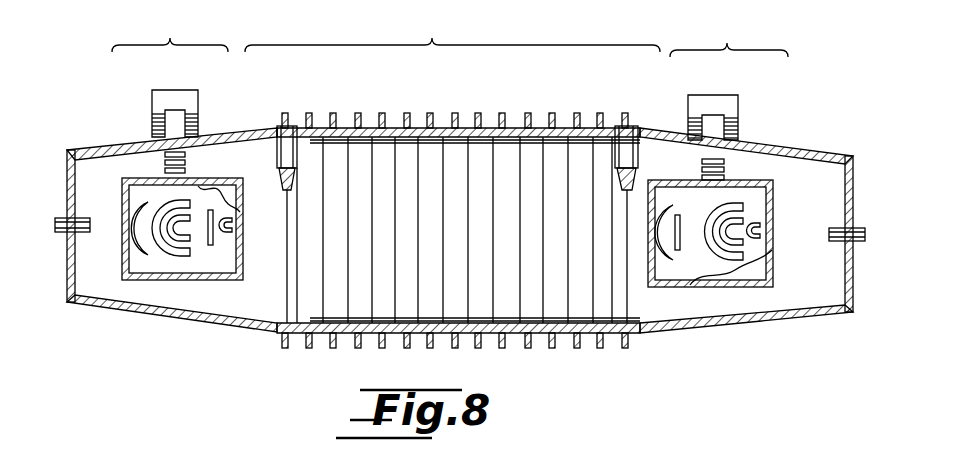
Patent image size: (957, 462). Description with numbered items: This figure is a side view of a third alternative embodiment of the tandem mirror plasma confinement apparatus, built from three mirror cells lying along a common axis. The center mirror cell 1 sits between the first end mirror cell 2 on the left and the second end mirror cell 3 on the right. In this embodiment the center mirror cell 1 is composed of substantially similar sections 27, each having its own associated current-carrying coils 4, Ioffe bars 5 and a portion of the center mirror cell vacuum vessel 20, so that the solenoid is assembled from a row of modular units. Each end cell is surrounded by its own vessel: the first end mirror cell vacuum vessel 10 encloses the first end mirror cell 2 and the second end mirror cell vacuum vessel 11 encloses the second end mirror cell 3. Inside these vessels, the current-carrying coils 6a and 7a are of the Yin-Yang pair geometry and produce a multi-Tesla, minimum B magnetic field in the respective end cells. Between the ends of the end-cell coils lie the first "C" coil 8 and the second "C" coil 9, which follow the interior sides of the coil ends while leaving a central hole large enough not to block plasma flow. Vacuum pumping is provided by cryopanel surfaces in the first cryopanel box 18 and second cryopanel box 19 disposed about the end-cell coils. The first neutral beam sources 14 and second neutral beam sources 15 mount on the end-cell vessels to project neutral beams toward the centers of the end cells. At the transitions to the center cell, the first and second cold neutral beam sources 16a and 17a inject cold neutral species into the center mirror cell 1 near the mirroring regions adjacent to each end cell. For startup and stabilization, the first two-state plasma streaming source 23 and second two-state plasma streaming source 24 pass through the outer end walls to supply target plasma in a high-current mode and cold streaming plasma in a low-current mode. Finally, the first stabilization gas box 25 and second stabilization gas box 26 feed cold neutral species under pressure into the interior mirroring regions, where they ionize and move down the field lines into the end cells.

The center mirror cell 1 is at (456, 191).
The first end mirror cell 2 is at (148, 172).
The second end mirror cell 3 is at (761, 175).
The current-carrying coils 4 is at (456, 113).
The Ioffe bars 5 is at (373, 143).
The current-carrying coil 6a is at (160, 200).
The current-carrying coil 7a is at (738, 216).
The first "C" coil 8 is at (238, 248).
The second "C" coil 9 is at (662, 246).
The first end mirror cell vacuum vessel 10 is at (67, 180).
The second end mirror cell vacuum vessel 11 is at (853, 205).
The first neutral beam sources 14 is at (152, 110).
The second neutral beam sources 15 is at (738, 106).
The first cold neutral beam source 16a is at (277, 127).
The second cold neutral beam source 17a is at (630, 127).
The first cryopanel box 18 is at (124, 205).
The second cryopanel box 19 is at (773, 266).
The center mirror cell vacuum vessel 20 is at (282, 333).
The first two-state plasma streaming source 23 is at (60, 234).
The second two-state plasma streaming source 24 is at (858, 242).
The first stabilization gas box 25 is at (212, 246).
The second stabilization gas box 26 is at (684, 250).
The sections 27 is at (466, 275).